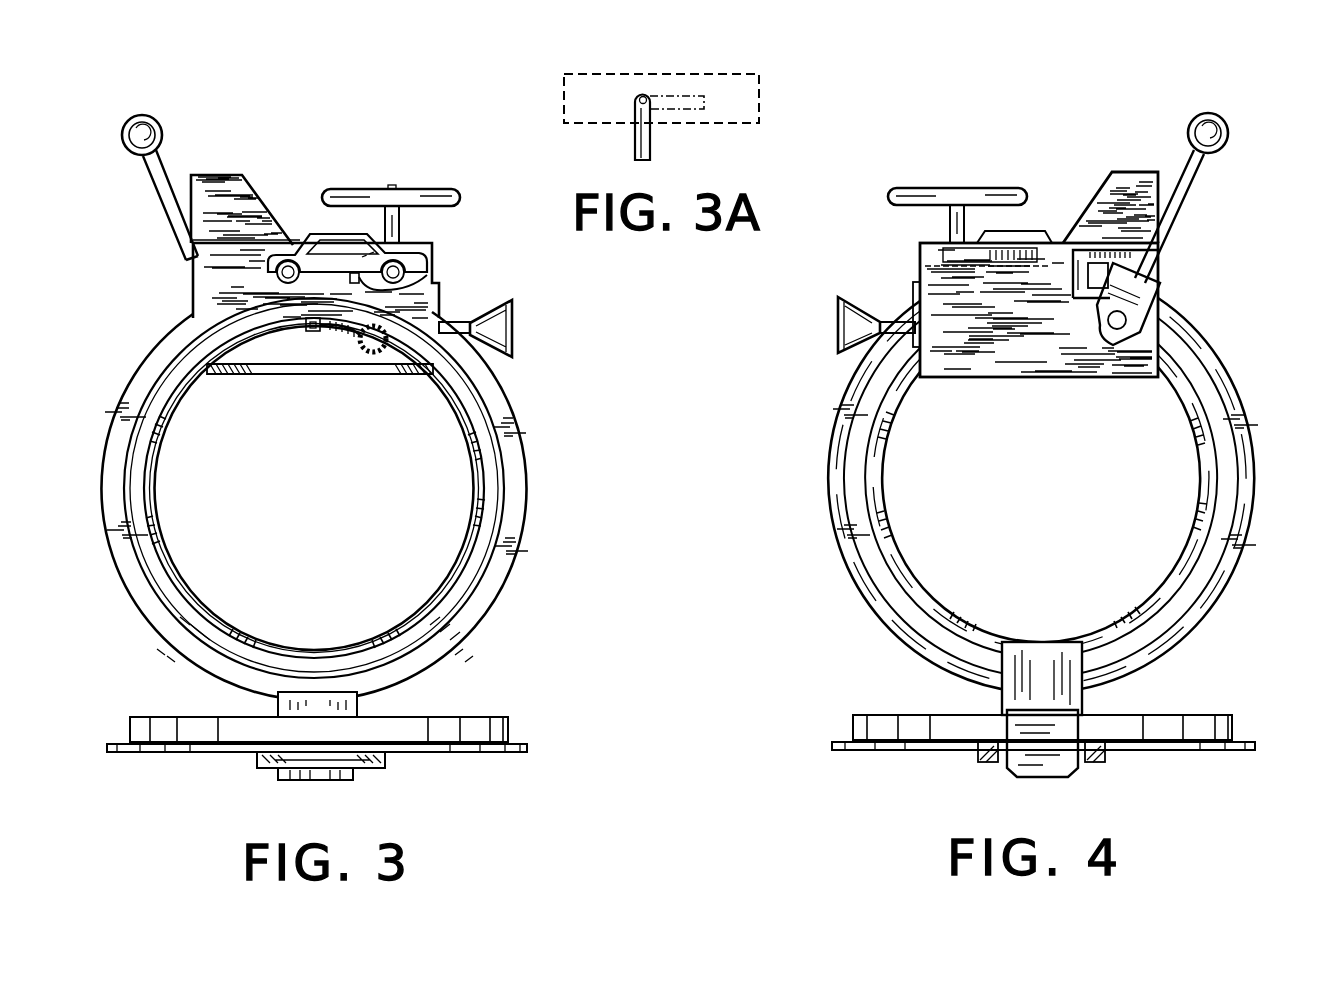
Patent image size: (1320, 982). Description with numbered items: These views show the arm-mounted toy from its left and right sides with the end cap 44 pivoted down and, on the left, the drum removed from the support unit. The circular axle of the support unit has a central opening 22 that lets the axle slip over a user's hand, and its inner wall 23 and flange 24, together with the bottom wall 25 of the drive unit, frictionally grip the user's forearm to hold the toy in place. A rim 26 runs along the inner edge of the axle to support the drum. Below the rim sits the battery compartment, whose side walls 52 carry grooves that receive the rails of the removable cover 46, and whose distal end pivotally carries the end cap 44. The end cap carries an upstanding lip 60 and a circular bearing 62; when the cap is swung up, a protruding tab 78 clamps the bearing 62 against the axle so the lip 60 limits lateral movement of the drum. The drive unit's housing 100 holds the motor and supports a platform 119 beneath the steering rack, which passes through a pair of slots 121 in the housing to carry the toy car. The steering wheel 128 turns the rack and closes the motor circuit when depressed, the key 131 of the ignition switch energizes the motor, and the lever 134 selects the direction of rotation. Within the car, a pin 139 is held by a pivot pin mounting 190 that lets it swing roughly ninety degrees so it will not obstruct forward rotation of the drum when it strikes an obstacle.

In FIG. 3, the opening 22 is at (328, 546).
In FIG. 3, the inner wall 23 is at (473, 458).
In FIG. 3, the flange 24 is at (246, 360).
In FIG. 3, the bottom wall 25 is at (393, 372).
In FIG. 4, the bottom wall 25 is at (997, 380).
In FIG. 4, the rim 26 is at (1255, 568).
In FIG. 3, the end cap 44 is at (518, 728).
In FIG. 4, the end cap 44 is at (1250, 725).
In FIG. 4, the removable cover 46 is at (1057, 765).
In FIG. 4, the side walls 52 is at (1000, 733).
In FIG. 3, the upstanding lip 60 is at (527, 748).
In FIG. 4, the upstanding lip 60 is at (833, 746).
In FIG. 3, the circular bearing 62 is at (445, 725).
In FIG. 4, the circular bearing 62 is at (912, 722).
In FIG. 3, the protruding tab 78 is at (314, 332).
In FIG. 4, the housing 100 is at (1103, 350).
In FIG. 4, the platform 119 is at (950, 264).
In FIG. 3, the slots 121 is at (398, 241).
In FIG. 3A, the slots 121 is at (737, 87).
In FIG. 4, the slots 121 is at (957, 252).
In FIG. 3, the steering wheel 128 is at (362, 188).
In FIG. 4, the steering wheel 128 is at (972, 188).
In FIG. 3, the key 131 is at (515, 338).
In FIG. 4, the key 131 is at (836, 330).
In FIG. 3, the lever 134 is at (157, 196).
In FIG. 4, the lever 134 is at (1178, 198).
In FIG. 3, the pin 139 is at (359, 278).
In FIG. 3A, the pin 139 is at (652, 140).
In FIG. 3A, the pivot pin mounting 190 is at (643, 95).